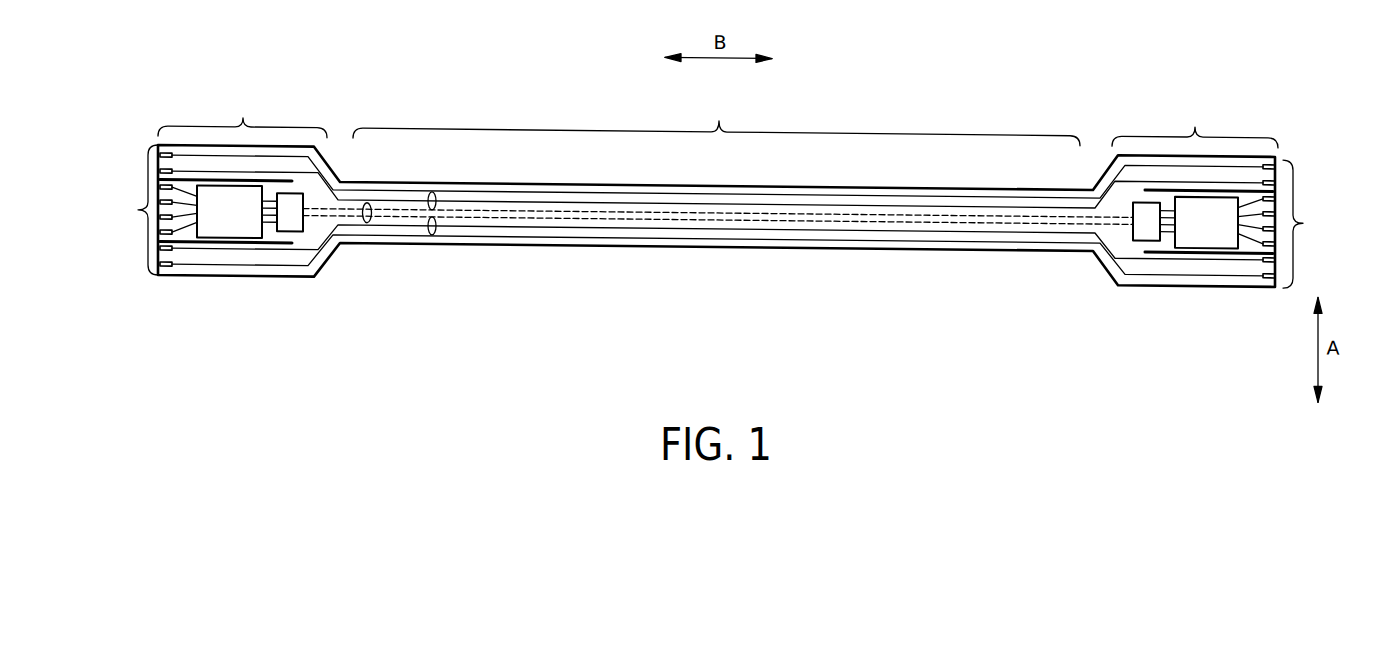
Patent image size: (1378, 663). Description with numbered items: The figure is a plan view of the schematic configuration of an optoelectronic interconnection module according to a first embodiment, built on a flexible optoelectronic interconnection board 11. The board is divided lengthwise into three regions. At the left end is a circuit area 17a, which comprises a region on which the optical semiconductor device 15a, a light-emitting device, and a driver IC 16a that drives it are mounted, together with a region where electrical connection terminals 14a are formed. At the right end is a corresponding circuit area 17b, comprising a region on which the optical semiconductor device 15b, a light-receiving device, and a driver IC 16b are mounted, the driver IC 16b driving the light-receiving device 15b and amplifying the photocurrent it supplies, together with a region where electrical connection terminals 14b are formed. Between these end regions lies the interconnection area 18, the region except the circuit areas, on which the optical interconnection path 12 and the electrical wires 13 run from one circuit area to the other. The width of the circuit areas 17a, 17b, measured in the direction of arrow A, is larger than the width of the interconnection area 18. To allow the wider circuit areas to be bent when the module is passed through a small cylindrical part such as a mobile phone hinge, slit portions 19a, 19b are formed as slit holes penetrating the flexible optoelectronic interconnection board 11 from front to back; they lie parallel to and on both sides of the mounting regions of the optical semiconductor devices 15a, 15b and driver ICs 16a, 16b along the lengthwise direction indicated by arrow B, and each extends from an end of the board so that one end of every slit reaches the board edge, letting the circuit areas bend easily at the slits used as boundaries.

The flexible optoelectronic interconnection board 11 is at (718, 286).
The optical interconnection path 12 is at (368, 220).
The electrical wires 13 is at (436, 199).
The electrical connection terminals 14a is at (148, 209).
The electrical connection terminals 14b is at (1291, 224).
The optical semiconductor device (light-emitting device) 15a is at (289, 222).
The optical semiconductor device (light-receiving device) 15b is at (1143, 226).
The driver IC 16a is at (240, 228).
The driver IC 16b is at (1201, 232).
The circuit area 17a is at (242, 113).
The circuit area 17b is at (1195, 124).
The interconnection area 18 is at (716, 118).
The slit portions (bend portions) 19a is at (180, 184).
The slit portions (bend portions) 19b is at (1251, 184).